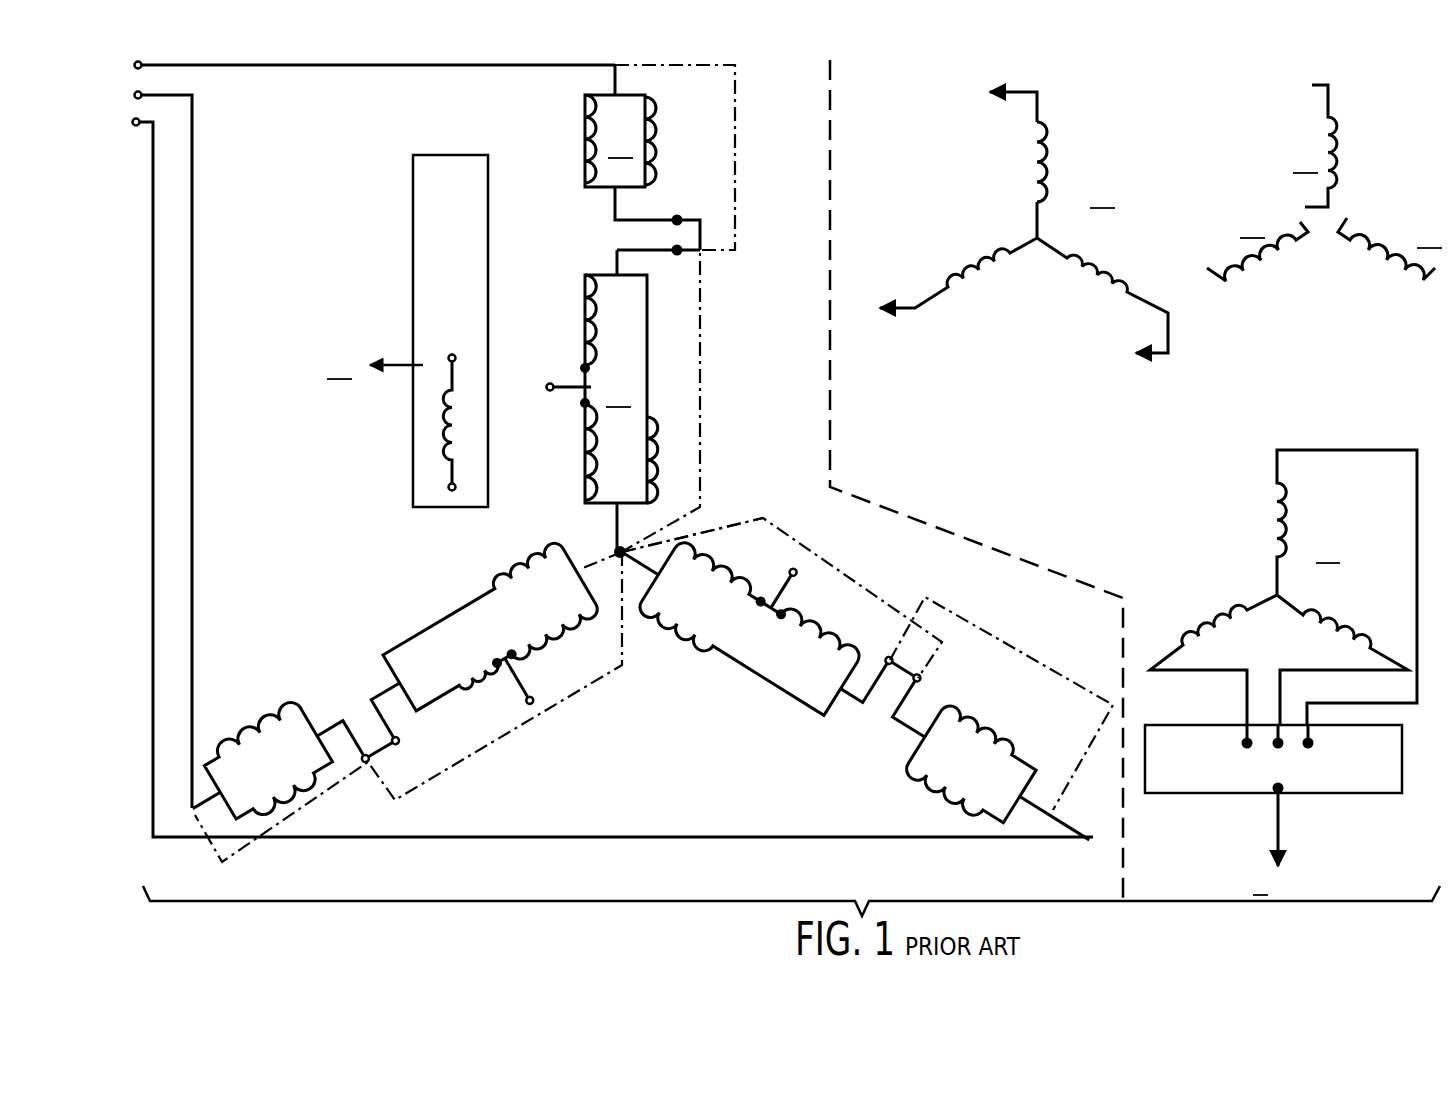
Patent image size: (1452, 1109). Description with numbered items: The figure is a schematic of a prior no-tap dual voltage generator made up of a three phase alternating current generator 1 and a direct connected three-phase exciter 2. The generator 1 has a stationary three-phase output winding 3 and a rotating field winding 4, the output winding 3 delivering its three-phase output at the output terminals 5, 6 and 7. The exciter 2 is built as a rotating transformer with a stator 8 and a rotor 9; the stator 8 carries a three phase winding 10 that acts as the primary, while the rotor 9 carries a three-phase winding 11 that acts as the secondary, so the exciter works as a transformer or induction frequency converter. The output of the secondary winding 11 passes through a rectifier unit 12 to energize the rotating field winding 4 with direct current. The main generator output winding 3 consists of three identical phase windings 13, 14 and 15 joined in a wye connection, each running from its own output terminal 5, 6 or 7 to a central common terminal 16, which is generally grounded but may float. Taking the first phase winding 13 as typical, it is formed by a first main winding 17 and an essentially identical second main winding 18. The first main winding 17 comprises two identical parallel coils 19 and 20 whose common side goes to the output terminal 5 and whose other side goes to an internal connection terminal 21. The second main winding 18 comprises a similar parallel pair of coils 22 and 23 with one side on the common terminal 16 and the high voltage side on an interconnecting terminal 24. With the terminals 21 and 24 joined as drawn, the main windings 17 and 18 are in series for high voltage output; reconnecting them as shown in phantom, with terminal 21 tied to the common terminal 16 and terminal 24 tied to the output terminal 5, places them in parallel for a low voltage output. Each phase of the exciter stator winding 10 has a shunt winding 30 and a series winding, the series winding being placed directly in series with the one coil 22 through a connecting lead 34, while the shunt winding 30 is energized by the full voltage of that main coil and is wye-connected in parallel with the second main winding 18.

The three phase alternating current generator 1 is at (759, 368).
The three-phase exciter 2 is at (912, 412).
The stationary three-phase output winding 3 is at (555, 286).
The rotating field winding 4 is at (422, 311).
The output terminal 5 is at (192, 67).
The output terminal 6 is at (194, 173).
The output terminal 7 is at (153, 268).
The stator 8 is at (1312, 362).
The rotor 9 is at (1386, 437).
The three phase stator winding 10 is at (1024, 222).
The rotor three-phase winding 11 is at (1283, 587).
The rectifier unit 12 is at (1360, 795).
The first phase winding 13 is at (711, 327).
The second phase winding 14 is at (505, 750).
The third phase winding 15 is at (777, 699).
The central common terminal 16 is at (619, 549).
The first main winding 17 is at (620, 157).
The second main winding 18 is at (630, 413).
The first coil 19 is at (586, 135).
The second coil 20 is at (656, 132).
The internal connection terminal 21 is at (678, 218).
The coil 22 is at (590, 456).
The coil 23 is at (656, 440).
The interconnecting terminal 24 is at (677, 254).
The shunt winding 30 is at (1042, 146).
The connecting lead 34 is at (588, 386).